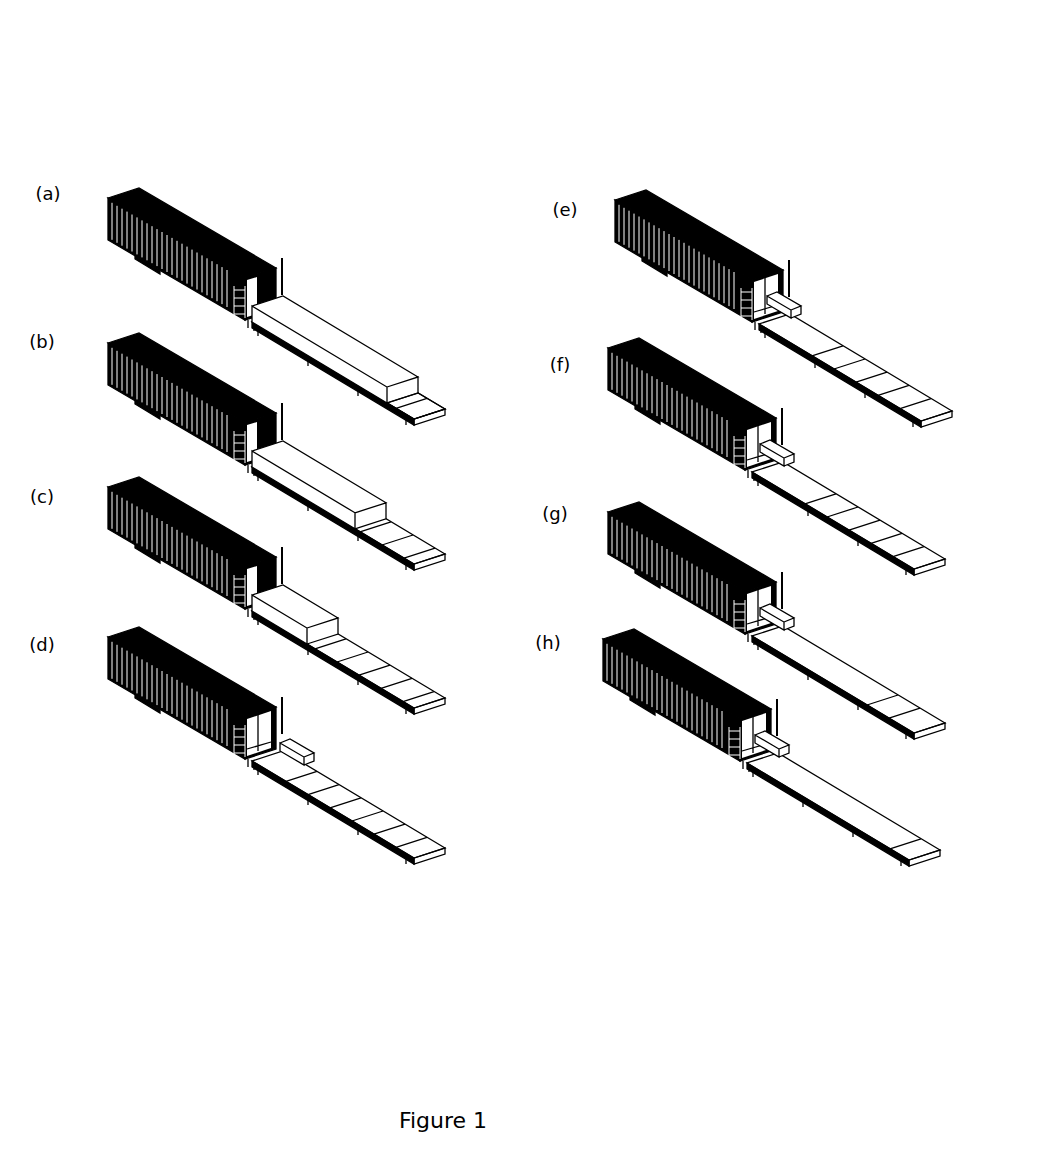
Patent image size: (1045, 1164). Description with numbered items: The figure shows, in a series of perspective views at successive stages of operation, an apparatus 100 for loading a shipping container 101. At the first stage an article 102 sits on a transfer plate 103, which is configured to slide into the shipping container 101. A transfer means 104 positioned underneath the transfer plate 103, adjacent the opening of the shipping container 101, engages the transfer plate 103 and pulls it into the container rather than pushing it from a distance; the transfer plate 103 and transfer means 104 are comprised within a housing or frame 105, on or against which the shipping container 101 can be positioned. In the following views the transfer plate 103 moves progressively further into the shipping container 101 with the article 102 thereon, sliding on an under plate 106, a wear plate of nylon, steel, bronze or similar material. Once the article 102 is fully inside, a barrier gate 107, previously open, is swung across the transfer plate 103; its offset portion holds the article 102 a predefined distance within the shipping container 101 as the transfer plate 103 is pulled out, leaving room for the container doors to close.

The apparatus 100 is at (395, 134).
The shipping container 101 is at (160, 177).
The article 102 is at (310, 318).
The transfer plate 103 is at (418, 388).
The transfer means 104 is at (305, 353).
The housing or frame 105 is at (436, 713).
The under plate 106 is at (380, 838).
The barrier gate 107 is at (305, 752).